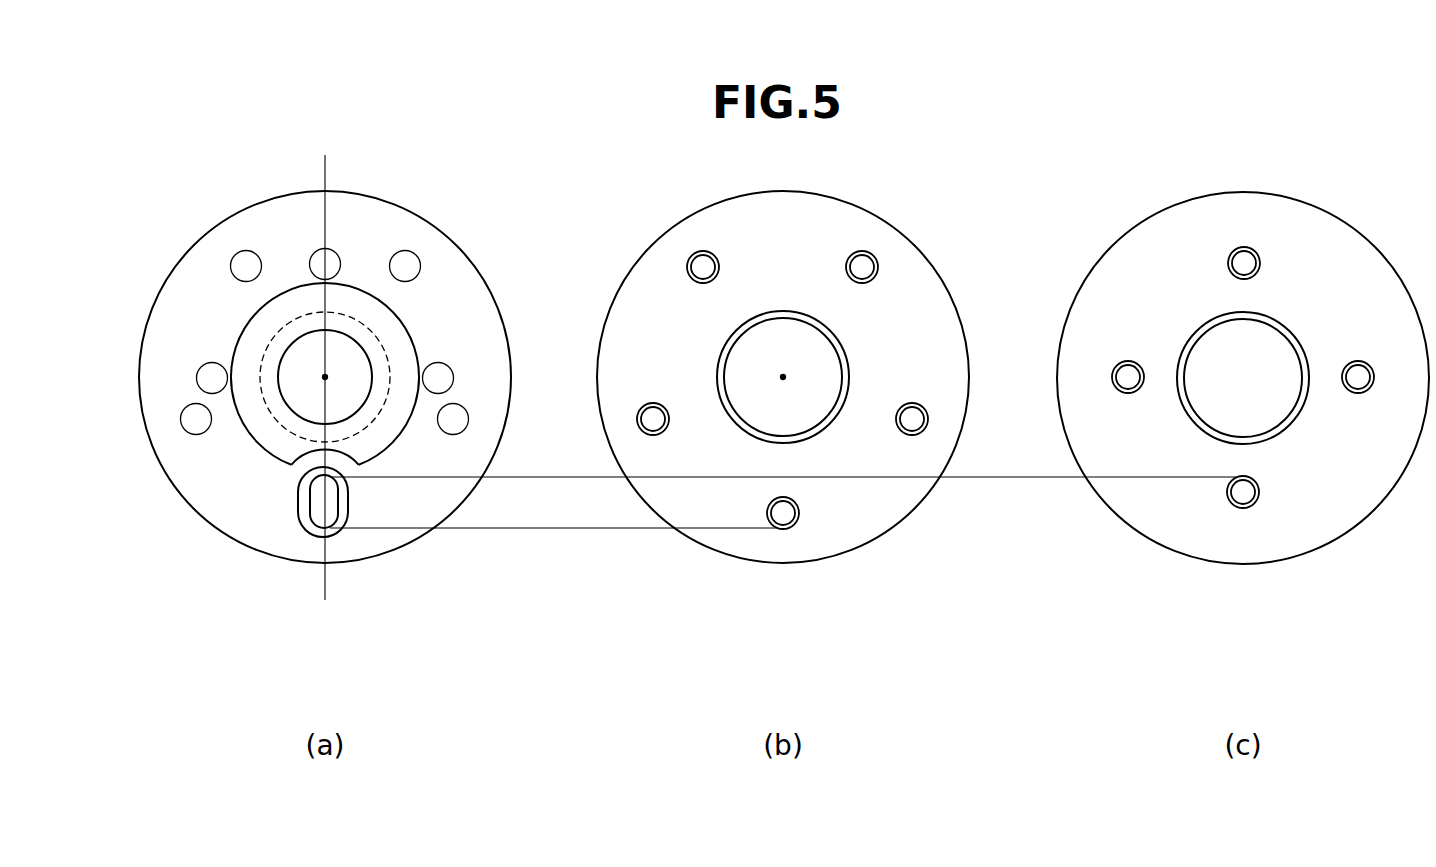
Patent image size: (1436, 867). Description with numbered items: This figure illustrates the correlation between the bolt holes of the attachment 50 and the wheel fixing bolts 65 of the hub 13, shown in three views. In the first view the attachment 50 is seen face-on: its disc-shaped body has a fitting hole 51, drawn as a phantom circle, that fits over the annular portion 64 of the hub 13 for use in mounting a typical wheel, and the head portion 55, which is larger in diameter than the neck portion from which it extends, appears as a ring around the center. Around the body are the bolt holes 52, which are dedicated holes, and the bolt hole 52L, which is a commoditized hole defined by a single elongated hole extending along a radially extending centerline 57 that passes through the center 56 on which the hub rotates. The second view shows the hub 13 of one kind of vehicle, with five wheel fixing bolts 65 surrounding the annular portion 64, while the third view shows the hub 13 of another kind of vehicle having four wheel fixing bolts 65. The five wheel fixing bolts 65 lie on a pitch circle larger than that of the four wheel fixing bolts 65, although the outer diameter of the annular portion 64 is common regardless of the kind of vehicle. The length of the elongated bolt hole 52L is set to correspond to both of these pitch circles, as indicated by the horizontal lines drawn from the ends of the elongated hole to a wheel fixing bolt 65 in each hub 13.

The hub 13 is at (913, 565).
The attachment 50 is at (245, 560).
The fitting hole 51 is at (372, 322).
The bolt holes 52 is at (165, 497).
The bolt hole (elongated hole) 52L is at (316, 505).
The head portion 55 is at (233, 348).
The center 56 is at (325, 377).
The centerline 57 is at (325, 455).
The annular portion 64 is at (727, 341).
The wheel fixing bolts 65 is at (870, 252).